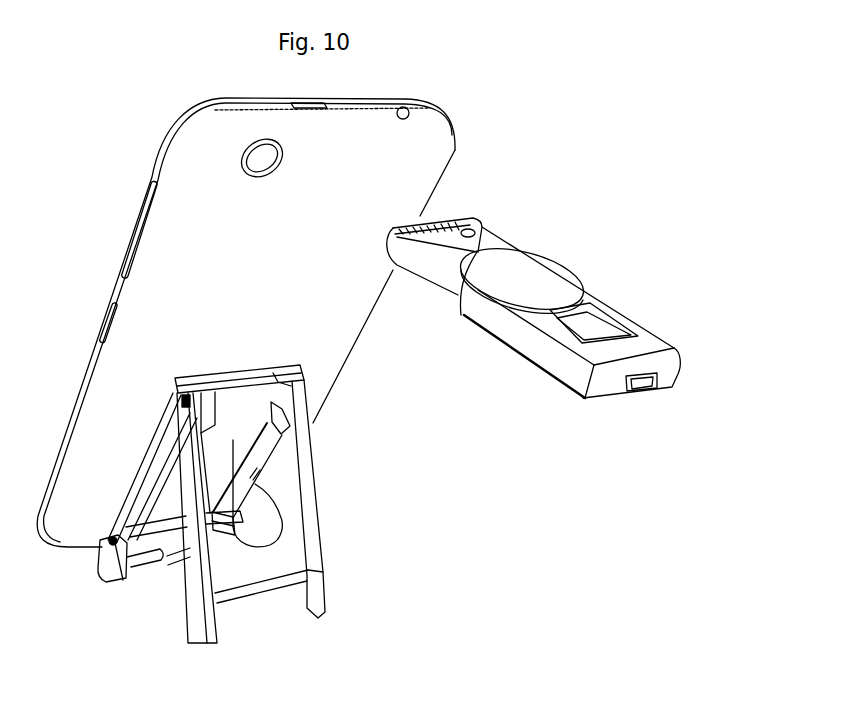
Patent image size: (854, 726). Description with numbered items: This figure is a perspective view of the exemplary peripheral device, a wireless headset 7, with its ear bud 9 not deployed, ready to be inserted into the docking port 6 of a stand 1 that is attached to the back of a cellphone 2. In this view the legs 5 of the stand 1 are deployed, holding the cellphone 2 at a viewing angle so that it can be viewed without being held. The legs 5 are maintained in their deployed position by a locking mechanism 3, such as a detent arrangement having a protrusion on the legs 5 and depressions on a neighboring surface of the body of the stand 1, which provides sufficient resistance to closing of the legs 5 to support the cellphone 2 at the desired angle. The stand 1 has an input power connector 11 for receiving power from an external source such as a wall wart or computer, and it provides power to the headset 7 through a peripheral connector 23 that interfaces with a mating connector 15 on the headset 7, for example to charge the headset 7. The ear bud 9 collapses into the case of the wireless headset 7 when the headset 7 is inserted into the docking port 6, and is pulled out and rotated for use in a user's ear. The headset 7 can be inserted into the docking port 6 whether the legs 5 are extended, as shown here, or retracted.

The stand 1 is at (100, 580).
The cellphone 2 is at (362, 175).
The locking mechanism 3 is at (110, 539).
The legs 5 is at (318, 453).
The docking port 6 is at (223, 461).
The wireless headset 7 is at (559, 295).
The ear bud 9 is at (427, 268).
The input power connector 11 is at (140, 567).
The mating connector 15 is at (642, 384).
The peripheral connector 23 is at (180, 514).